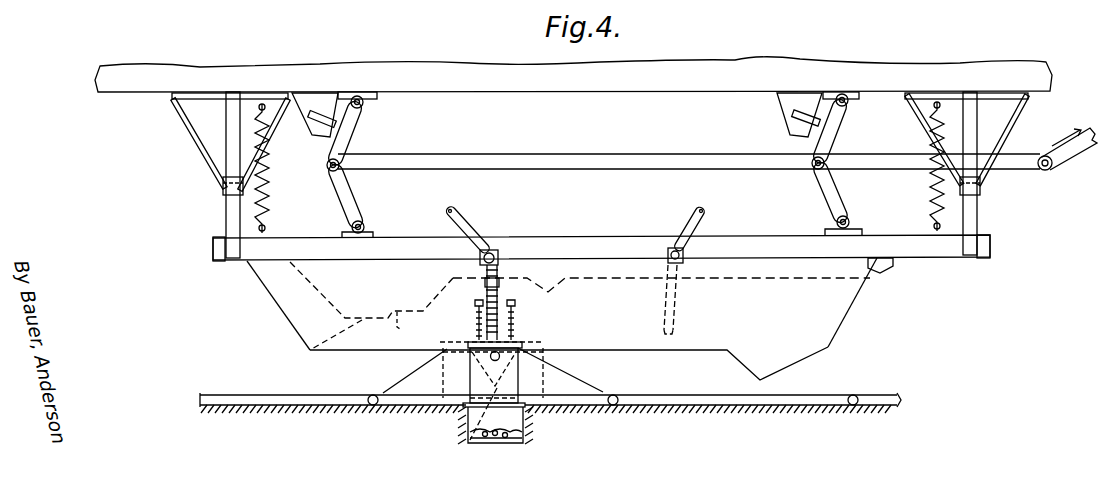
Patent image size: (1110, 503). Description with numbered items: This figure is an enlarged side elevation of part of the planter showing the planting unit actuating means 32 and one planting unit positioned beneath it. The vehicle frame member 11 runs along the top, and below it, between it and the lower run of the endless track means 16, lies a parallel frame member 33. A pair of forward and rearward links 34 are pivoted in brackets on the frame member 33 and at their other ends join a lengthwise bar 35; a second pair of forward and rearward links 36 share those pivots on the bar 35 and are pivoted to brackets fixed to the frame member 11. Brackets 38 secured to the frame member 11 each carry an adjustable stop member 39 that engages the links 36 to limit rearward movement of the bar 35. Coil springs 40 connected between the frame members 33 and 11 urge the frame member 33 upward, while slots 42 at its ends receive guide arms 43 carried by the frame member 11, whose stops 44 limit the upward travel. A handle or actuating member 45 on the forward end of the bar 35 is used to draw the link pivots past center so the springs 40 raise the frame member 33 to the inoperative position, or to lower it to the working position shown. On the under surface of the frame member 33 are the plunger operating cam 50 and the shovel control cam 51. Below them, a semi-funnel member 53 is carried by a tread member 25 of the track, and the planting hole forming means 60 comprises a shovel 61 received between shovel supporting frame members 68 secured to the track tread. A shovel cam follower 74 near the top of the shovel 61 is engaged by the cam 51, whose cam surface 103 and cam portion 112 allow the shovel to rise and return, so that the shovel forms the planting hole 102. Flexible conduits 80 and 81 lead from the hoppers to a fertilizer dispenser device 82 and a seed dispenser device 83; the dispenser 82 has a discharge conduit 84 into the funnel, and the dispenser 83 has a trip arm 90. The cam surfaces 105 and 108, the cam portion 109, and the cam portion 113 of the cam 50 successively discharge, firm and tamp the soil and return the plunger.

The frame member 11 is at (733, 57).
The endless track means 16 is at (856, 413).
The tread members 25 is at (633, 403).
The planting unit actuating means 32 is at (157, 175).
The frame member 33 is at (577, 239).
The forward and rearward links 34 is at (350, 200).
The bar 35 is at (548, 160).
The second pair of forward and rearward links 36 is at (353, 132).
The brackets 38 is at (312, 93).
The adjustable stop member 39 is at (330, 130).
The coil springs 40 is at (270, 200).
The slots 42 is at (227, 263).
The guide arms 43 is at (233, 220).
The stops 44 is at (227, 177).
The handle or actuating member 45 is at (1068, 158).
The plunger operating cam 50 is at (890, 267).
The shovel control cam 51 is at (840, 325).
The semi-funnel member 53 is at (555, 345).
The planting hole forming means 60 is at (459, 418).
The shovel or hole digging member 61 is at (497, 388).
The shovel supporting frame members 68 is at (420, 380).
The shovel cam follower 74 is at (503, 351).
The flexible conduit 80 is at (687, 222).
The flexible conduit 81 is at (465, 222).
The fertilizer dispenser device 82 is at (683, 250).
The seed dispenser device 83 is at (498, 250).
The discharge conduit 84 is at (677, 310).
The trip arm 90 is at (448, 283).
The planting hole 102 is at (532, 437).
The cam surface 103 is at (715, 352).
The cam surface 105 is at (553, 290).
The cam surface 108 is at (421, 327).
The cam portion 109 is at (305, 348).
The cam portion 112 is at (278, 321).
The cam portion 113 is at (283, 297).